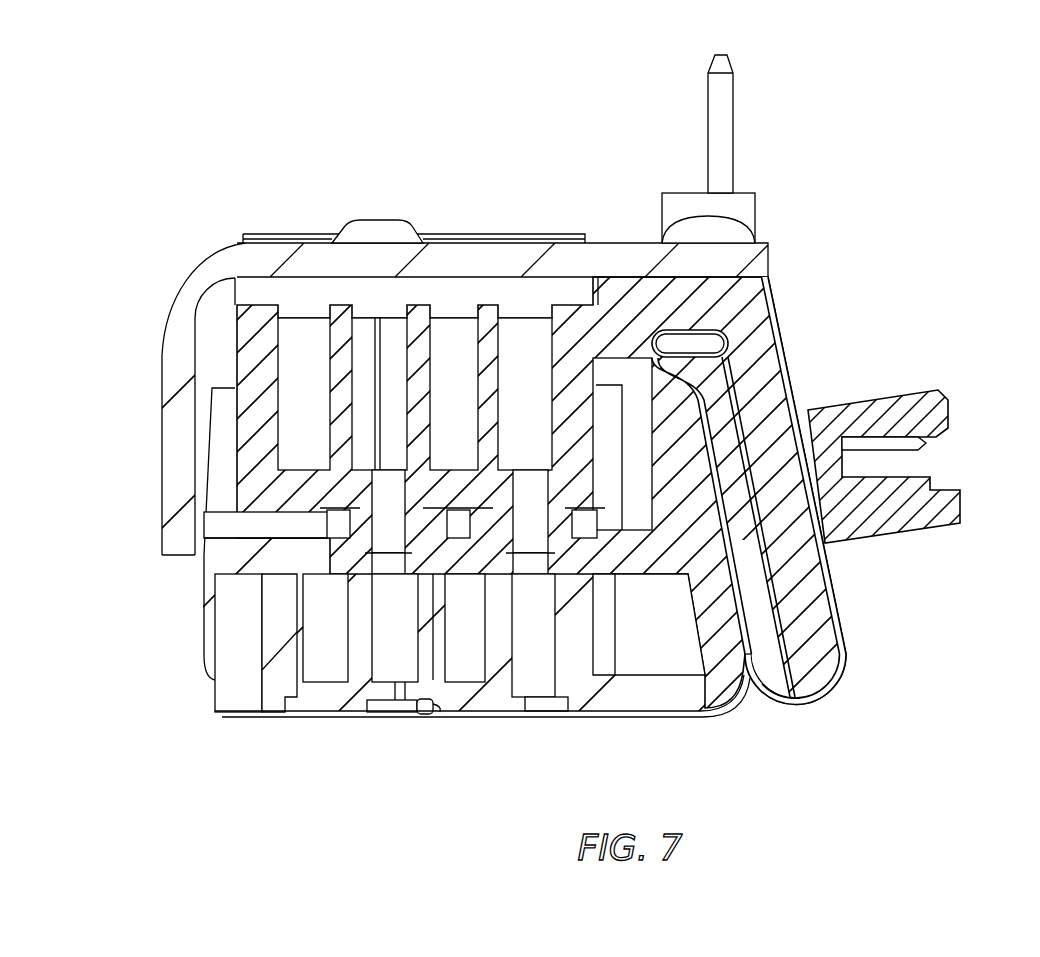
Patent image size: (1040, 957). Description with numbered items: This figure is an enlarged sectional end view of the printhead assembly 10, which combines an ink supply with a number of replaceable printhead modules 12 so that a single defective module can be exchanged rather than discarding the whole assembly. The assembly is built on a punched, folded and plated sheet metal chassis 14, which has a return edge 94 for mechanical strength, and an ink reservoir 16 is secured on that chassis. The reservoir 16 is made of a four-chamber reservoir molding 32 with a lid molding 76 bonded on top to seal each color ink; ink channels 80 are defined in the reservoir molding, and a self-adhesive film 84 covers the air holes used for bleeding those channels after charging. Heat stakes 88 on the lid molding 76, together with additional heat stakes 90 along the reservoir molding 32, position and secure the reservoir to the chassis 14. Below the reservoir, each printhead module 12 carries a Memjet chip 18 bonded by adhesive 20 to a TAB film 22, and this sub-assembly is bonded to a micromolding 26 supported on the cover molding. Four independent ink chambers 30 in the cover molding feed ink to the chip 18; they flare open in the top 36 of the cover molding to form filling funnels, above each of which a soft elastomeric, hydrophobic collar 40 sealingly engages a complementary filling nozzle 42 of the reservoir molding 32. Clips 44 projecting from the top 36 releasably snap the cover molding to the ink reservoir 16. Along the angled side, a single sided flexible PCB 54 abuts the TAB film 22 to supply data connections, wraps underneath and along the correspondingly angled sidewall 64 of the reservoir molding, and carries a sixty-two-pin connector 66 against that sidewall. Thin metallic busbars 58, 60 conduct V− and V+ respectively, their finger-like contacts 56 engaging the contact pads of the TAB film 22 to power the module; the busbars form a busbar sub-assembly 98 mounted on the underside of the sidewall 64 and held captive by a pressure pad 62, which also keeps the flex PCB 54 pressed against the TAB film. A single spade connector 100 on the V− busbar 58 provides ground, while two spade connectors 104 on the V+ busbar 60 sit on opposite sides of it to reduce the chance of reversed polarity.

The printhead assembly 10 is at (883, 183).
The printhead module 12 is at (180, 700).
The chassis 14 is at (612, 222).
The ink reservoir 16 is at (228, 333).
The microelectromechanical (Memjet) chip 18 is at (425, 718).
The adhesive 20 is at (400, 712).
The Tape Automated Bond (TAB) film 22 is at (548, 717).
The micromolding 26 is at (327, 700).
The ink chambers 30 is at (322, 630).
The reservoir molding 32 is at (252, 320).
The top of the cover molding 36 is at (298, 535).
The collar 40 is at (660, 700).
The filling formations or nozzles 42 is at (298, 563).
The clips 44 is at (233, 383).
The flexible PCB 54 is at (780, 693).
The contacts 56 is at (750, 312).
The busbar 58 is at (825, 513).
The busbar 60 is at (827, 600).
The pressure pad 62 is at (827, 660).
The sidewall 64 is at (773, 378).
The connector 66 is at (897, 402).
The lid molding 76 is at (252, 285).
The ink channels 80 is at (307, 335).
The self-adhesive film 84 is at (460, 237).
The heat stakes 88 is at (355, 222).
The heat stakes 90 is at (732, 232).
The return edge 94 is at (185, 476).
The busbar sub-assembly 98 is at (778, 663).
The spade connector 100 is at (814, 124).
The spade connectors 104 is at (732, 108).